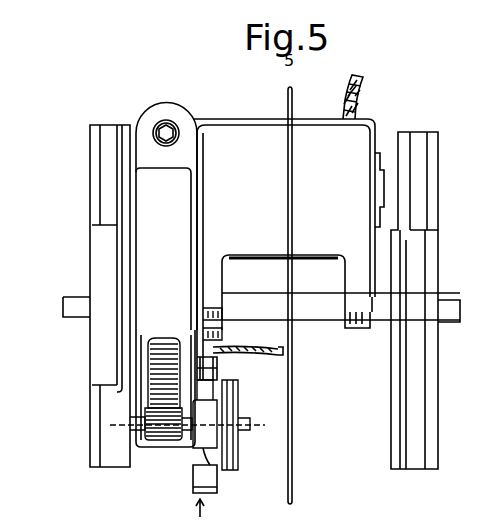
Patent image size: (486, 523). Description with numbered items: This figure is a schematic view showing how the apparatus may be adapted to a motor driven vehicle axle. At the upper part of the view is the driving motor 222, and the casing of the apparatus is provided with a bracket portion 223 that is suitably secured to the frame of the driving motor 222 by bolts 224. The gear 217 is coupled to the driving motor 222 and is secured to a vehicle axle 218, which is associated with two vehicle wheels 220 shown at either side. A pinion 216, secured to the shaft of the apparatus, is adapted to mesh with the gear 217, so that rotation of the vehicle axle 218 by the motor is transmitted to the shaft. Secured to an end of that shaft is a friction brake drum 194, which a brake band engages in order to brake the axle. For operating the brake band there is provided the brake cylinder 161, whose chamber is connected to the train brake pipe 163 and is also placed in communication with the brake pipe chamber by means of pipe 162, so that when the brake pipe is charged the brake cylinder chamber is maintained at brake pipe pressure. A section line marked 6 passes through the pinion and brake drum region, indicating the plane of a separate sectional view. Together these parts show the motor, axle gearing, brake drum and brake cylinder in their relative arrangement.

The driving motor 222 is at (362, 133).
The train brake pipe 163 is at (292, 186).
The vehicle wheels 220 is at (103, 360).
The vehicle axle 218 is at (325, 313).
The bracket portion 223 is at (218, 312).
The bolts 224 is at (218, 333).
The gear 217 is at (165, 352).
The pinion 216 is at (165, 440).
The brake cylinder 161 is at (217, 366).
The pipe 162 is at (198, 462).
The friction brake drum 194 is at (240, 465).
The section line 6- 6 is at (118, 416).